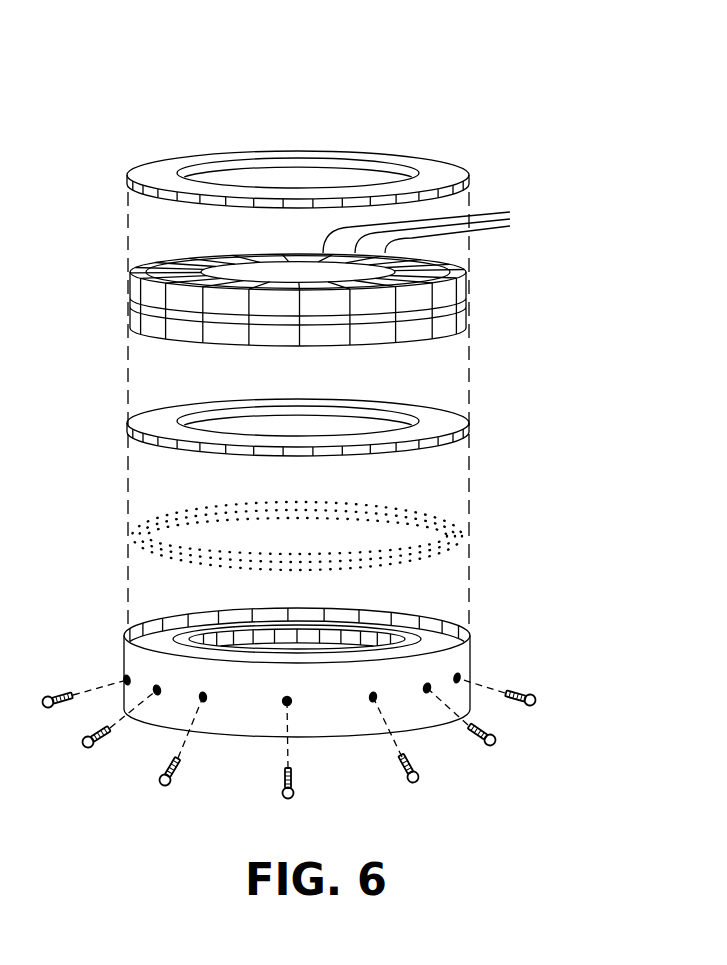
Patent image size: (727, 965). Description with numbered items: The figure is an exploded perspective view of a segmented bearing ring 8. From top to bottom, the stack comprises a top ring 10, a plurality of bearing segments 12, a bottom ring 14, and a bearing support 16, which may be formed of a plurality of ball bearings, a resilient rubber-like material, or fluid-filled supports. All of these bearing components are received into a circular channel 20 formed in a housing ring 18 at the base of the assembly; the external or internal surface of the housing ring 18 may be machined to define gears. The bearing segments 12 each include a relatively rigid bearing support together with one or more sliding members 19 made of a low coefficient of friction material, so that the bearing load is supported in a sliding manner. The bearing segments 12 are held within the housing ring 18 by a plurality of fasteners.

The segmented bearing ring 8 is at (388, 56).
The top ring 10 is at (443, 176).
The bearing segments 12 is at (470, 294).
The bottom ring 14 is at (443, 424).
The bearing support 16 is at (423, 524).
The housing ring 18 is at (294, 695).
The sliding member 19 is at (431, 231).
The circular channel 20 is at (137, 632).